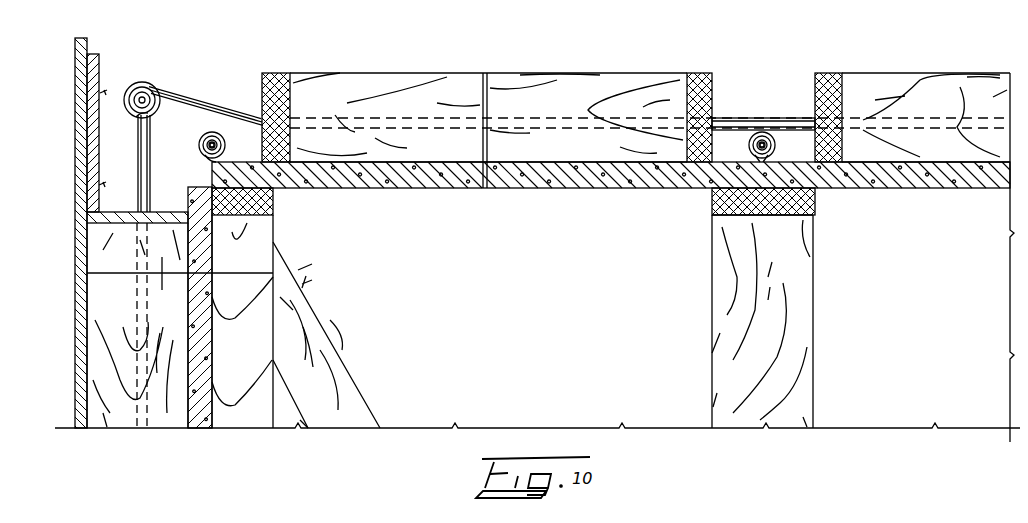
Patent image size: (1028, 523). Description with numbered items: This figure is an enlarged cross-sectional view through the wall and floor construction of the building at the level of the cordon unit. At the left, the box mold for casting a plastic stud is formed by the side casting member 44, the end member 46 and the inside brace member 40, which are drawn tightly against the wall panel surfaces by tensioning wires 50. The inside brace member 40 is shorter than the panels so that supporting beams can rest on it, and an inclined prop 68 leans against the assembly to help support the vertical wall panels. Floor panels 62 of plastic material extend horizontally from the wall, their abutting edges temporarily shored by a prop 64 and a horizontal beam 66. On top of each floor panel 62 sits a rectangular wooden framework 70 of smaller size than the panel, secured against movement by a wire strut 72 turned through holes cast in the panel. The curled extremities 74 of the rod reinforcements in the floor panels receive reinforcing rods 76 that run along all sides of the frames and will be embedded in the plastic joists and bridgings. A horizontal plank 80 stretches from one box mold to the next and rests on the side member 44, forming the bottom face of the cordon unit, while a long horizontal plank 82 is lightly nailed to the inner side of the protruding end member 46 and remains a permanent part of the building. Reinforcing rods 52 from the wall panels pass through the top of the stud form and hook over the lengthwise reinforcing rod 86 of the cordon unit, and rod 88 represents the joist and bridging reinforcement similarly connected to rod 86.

The inside brace member 40 is at (257, 325).
The side casting member 44 is at (107, 428).
The end member 46 is at (72, 362).
The tensioning wire 50 is at (85, 290).
The reinforcing rod 52 is at (150, 146).
The floor panel 62 is at (437, 188).
The prop 64 is at (805, 278).
The horizontal beam 66 is at (818, 200).
The inclined prop 68 is at (330, 380).
The rectangular wooden framework 70 is at (700, 73).
The wire strut 72 is at (495, 75).
The curled extremity of rod reinforcement 74 is at (208, 133).
The reinforcing rod 76 is at (222, 152).
The horizontal plank 80 is at (98, 230).
The long horizontal plank 82 is at (100, 70).
The reinforcing rod 86 is at (137, 117).
The rod 88 is at (185, 90).